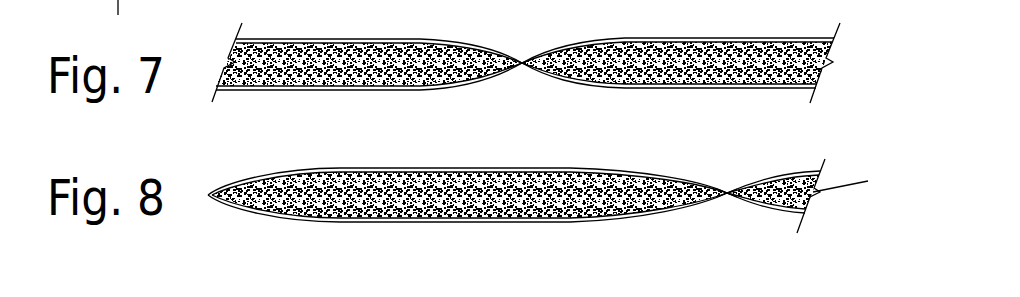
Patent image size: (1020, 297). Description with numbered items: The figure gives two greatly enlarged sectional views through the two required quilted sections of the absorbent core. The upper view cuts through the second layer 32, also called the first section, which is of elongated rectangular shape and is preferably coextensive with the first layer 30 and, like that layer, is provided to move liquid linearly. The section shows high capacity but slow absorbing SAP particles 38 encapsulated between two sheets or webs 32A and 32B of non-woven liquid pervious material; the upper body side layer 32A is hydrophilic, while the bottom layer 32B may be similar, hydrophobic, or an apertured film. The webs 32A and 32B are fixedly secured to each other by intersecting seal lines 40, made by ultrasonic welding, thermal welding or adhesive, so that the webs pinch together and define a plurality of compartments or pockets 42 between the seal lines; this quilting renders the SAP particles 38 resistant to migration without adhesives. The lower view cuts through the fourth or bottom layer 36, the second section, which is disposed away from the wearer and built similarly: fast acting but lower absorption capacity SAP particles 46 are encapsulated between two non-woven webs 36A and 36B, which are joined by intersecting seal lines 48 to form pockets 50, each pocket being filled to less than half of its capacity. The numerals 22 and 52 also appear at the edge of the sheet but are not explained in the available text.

In FIG. 7, the cutting element 22 is at (118, 5).
In FIG. 7, the first layer 30 is at (39, 11).
In FIG. 7, the edge 52 is at (71, 10).
In FIG. 7, the second layer 32 is at (558, 61).
In FIG. 7, the upper body side layer 32A is at (460, 42).
In FIG. 7, the bottom layer 32B is at (445, 88).
In FIG. 7, the SAP particles 38 is at (408, 47).
In FIG. 7, the seal lines 40 is at (523, 62).
In FIG. 7, the pockets 42 is at (332, 37).
In FIG. 8, the bottom layer 36 is at (515, 197).
In FIG. 8, the sheet 36A is at (288, 172).
In FIG. 8, the sheet 36B is at (467, 222).
In FIG. 8, the SAP particles 46 is at (387, 183).
In FIG. 8, the seal lines 48 is at (728, 197).
In FIG. 8, the pockets 50 is at (602, 170).